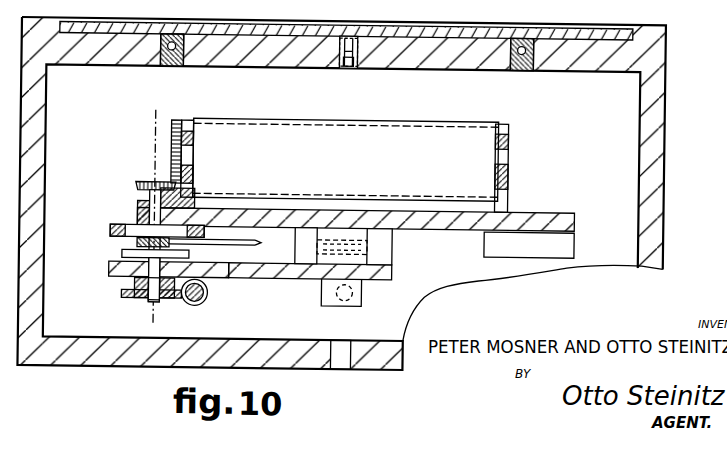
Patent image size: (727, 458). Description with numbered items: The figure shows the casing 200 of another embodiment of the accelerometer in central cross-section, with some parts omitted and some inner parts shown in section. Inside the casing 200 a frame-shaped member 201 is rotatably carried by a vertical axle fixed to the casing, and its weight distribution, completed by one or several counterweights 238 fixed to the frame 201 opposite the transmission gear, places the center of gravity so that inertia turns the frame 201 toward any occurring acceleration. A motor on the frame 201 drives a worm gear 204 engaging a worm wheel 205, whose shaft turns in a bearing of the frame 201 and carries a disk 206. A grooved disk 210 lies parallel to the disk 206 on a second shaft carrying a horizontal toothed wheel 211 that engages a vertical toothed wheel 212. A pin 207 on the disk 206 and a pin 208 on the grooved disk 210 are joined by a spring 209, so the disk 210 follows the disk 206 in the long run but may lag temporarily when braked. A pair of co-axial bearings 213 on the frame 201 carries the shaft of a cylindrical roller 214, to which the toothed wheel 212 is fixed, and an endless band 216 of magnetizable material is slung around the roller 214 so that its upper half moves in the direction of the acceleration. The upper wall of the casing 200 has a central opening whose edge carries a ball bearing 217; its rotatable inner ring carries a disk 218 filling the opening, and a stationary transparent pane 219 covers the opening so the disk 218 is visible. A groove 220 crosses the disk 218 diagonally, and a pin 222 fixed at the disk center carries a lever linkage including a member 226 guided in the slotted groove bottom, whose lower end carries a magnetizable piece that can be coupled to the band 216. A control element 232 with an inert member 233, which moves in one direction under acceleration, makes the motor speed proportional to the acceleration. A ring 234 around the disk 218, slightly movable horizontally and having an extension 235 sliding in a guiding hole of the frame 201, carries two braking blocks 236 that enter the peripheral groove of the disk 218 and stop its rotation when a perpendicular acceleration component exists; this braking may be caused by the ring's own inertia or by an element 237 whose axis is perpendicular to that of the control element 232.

The casing 200 is at (663, 108).
The frame-shaped member 201 is at (446, 224).
The worm gear 204 is at (216, 300).
The worm wheel 205 is at (141, 296).
The disk 206 is at (131, 254).
The pin 207 is at (190, 247).
The pin 208 is at (143, 246).
The spring 209 is at (120, 267).
The grooved disk 210 is at (140, 202).
The horizontal toothed wheel 211 is at (142, 182).
The vertical toothed wheel 212 is at (176, 121).
The pair of co-axial bearings 213 is at (186, 129).
The cylindrical roller 214 is at (346, 159).
The endless belt or band 216 is at (366, 116).
The ball bearing 217 is at (158, 48).
The disk 218 is at (274, 47).
The stationary disk or pane 219 is at (580, 33).
The groove 220 is at (348, 37).
The pin 222 is at (352, 58).
The member 226 is at (356, 40).
The control element 232 is at (371, 298).
The inert member 233 is at (336, 296).
The ring 234 is at (115, 227).
The extension 235 is at (260, 235).
The braking blocks 236 is at (146, 228).
The element 237 is at (363, 242).
The counterweights 238 is at (529, 245).